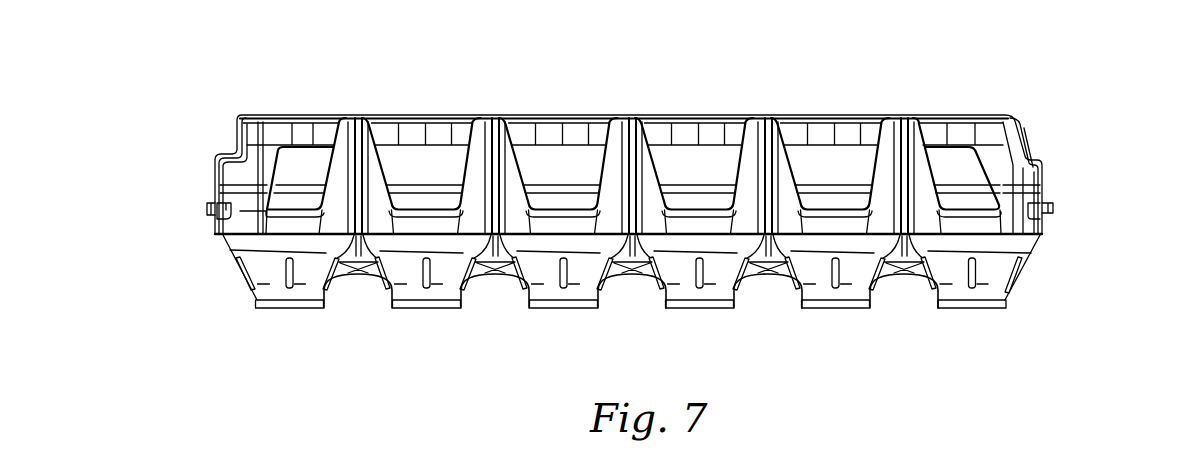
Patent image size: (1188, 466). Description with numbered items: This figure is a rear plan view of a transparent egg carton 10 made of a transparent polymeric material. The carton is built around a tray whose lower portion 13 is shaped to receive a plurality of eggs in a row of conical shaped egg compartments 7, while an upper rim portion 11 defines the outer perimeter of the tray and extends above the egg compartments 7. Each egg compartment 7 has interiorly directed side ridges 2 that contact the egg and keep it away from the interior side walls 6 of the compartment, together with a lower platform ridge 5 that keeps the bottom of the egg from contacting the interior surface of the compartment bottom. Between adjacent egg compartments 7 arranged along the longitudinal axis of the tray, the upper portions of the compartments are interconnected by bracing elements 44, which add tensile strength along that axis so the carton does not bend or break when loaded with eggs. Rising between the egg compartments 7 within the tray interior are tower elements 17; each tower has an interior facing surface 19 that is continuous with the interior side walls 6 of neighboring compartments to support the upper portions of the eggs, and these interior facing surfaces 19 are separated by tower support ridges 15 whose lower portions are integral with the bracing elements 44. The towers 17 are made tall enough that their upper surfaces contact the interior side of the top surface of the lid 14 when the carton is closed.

The egg carton 10 is at (869, 43).
The lid 14 is at (1093, 206).
The lower portion 13 is at (1093, 215).
The upper rim portion 11 is at (214, 228).
The tower support ridges 15 is at (326, 174).
The tower elements 17 is at (631, 142).
The interior facing surface 19 is at (629, 154).
The bracing elements 44 is at (630, 290).
The lower platform ridge 5 is at (631, 332).
The side ridges 2 is at (622, 311).
The interior side walls 6 is at (628, 272).
The egg compartments 7 is at (1019, 268).